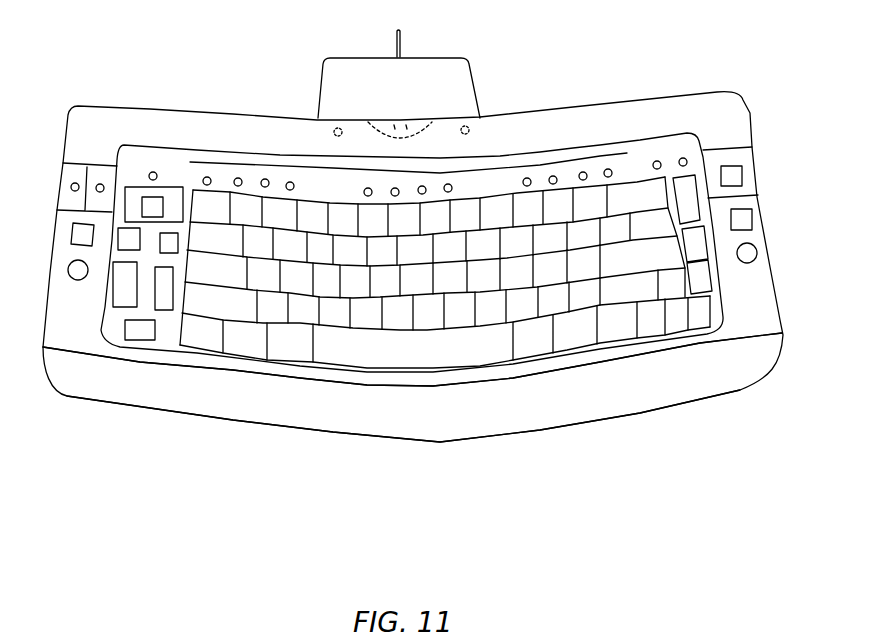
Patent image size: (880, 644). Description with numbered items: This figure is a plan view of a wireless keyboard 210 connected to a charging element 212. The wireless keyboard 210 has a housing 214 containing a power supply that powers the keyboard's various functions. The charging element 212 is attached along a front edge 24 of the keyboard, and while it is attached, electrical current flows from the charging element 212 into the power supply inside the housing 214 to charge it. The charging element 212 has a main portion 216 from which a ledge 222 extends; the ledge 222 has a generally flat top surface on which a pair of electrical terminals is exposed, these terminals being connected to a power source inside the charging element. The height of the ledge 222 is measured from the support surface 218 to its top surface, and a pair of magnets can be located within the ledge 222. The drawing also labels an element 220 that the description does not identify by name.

The front edge 24 is at (233, 113).
The wireless keyboard 210 is at (153, 443).
The charging element 212 is at (348, 72).
The housing 214 is at (92, 370).
The main portion 216 is at (381, 384).
The support surface 218 is at (637, 190).
The buttons 220 is at (98, 193).
The ledge 222 is at (402, 34).